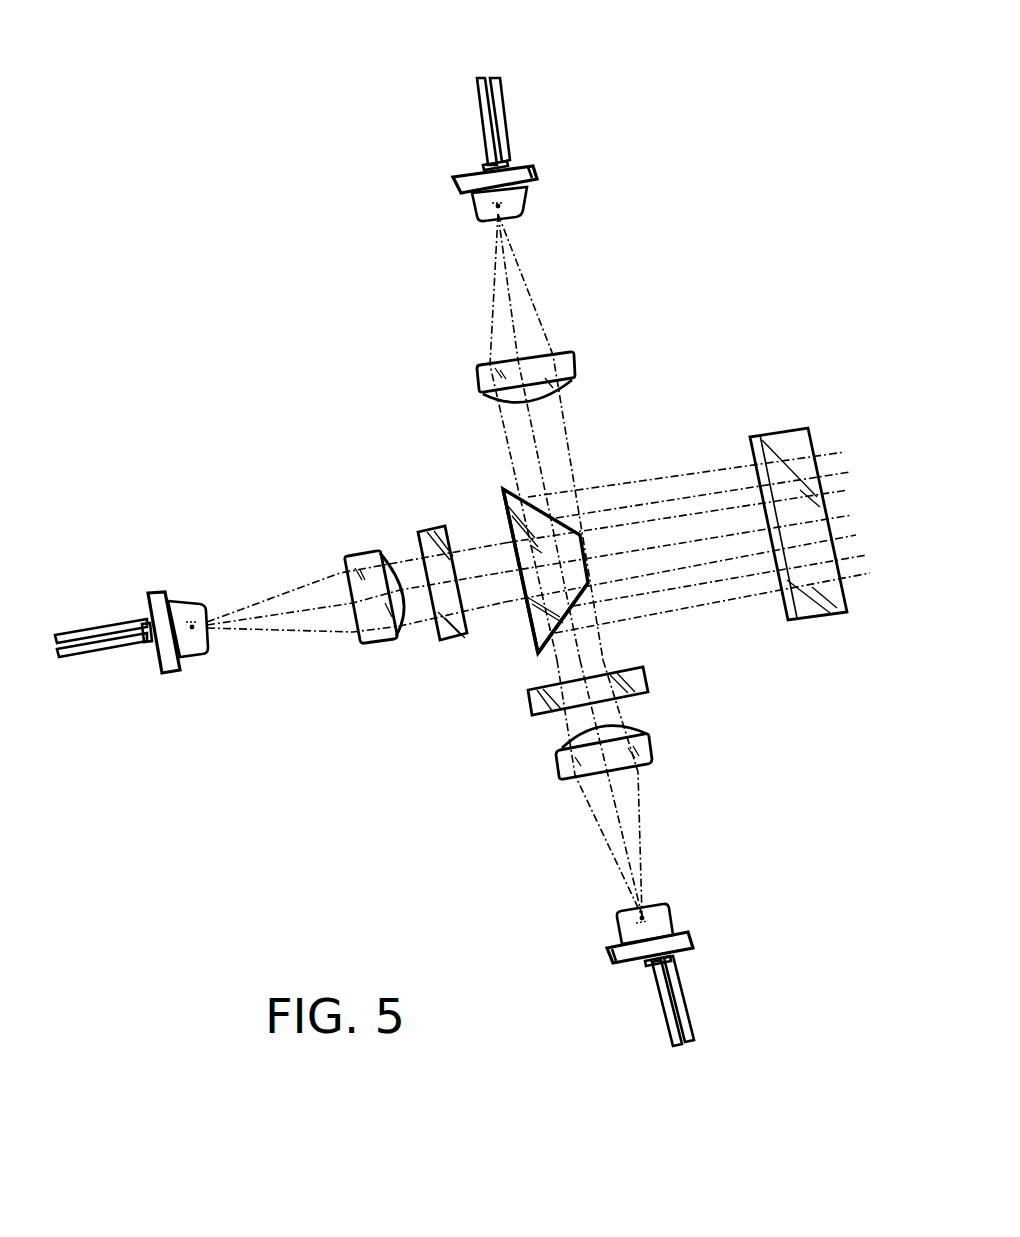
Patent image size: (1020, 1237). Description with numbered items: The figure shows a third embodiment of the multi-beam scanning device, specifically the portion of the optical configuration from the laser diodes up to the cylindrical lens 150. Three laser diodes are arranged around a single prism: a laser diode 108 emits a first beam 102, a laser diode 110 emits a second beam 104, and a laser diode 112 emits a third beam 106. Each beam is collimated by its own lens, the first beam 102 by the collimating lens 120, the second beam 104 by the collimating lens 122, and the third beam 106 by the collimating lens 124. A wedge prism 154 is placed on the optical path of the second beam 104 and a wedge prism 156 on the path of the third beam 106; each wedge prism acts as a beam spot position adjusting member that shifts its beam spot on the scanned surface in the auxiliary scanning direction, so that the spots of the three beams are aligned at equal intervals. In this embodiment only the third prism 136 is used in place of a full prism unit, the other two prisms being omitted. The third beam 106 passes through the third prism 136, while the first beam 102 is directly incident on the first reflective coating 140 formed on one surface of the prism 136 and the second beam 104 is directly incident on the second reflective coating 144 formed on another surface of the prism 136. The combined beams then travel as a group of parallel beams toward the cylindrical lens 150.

The first beam 102 is at (532, 287).
The second beam 104 is at (643, 838).
The third beam 106 is at (278, 588).
The laser diode 108 is at (472, 178).
The laser diode 110 is at (627, 963).
The laser diode 112 is at (163, 652).
The collimating lens 120 is at (483, 373).
The collimating lens 122 is at (563, 768).
The collimating lens 124 is at (370, 633).
The third prism 136 is at (530, 612).
The first reflective coating 140 is at (548, 503).
The second reflective coating 144 is at (580, 602).
The cylindrical lens 150 is at (780, 435).
The wedge prism 154 is at (648, 690).
The wedge prism 156 is at (438, 527).